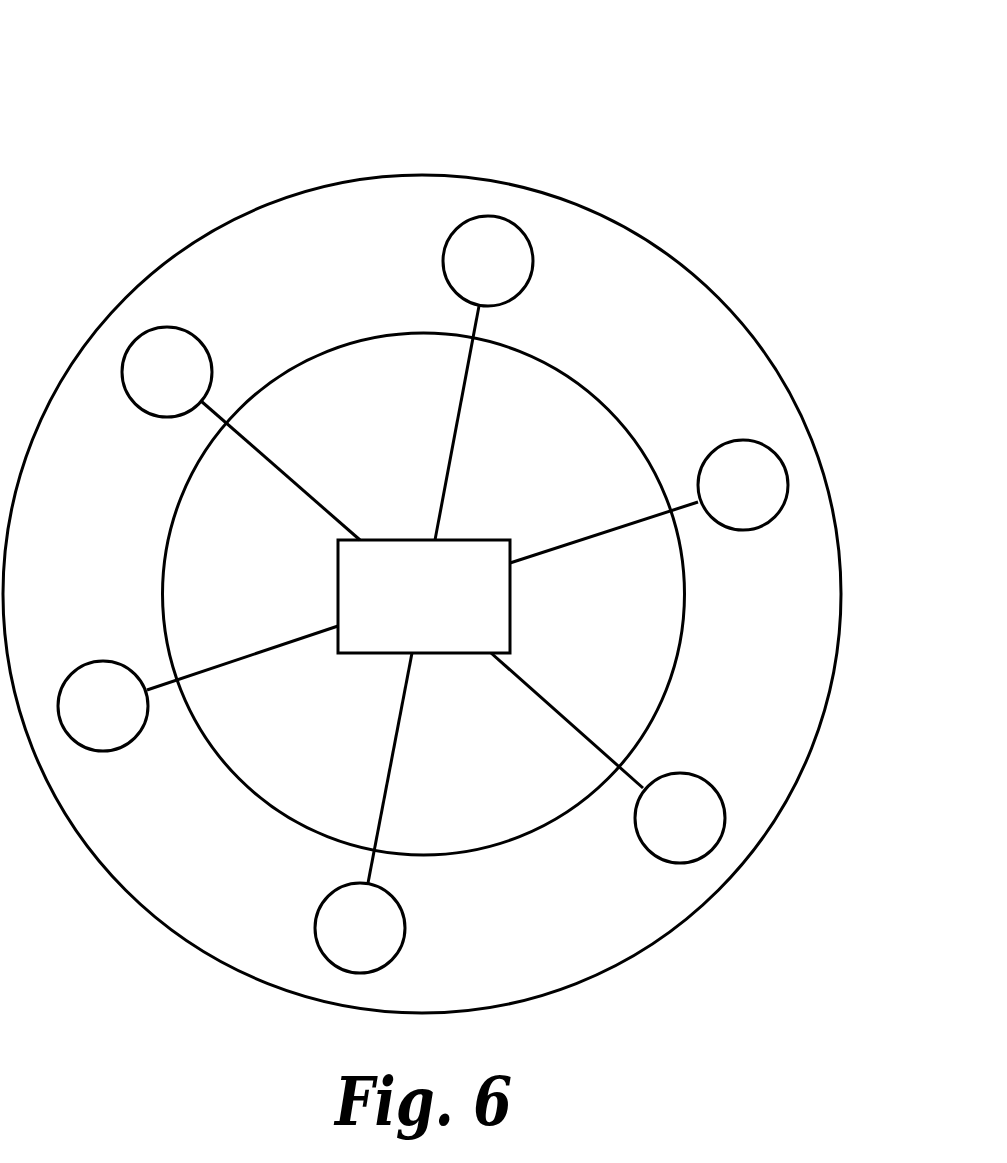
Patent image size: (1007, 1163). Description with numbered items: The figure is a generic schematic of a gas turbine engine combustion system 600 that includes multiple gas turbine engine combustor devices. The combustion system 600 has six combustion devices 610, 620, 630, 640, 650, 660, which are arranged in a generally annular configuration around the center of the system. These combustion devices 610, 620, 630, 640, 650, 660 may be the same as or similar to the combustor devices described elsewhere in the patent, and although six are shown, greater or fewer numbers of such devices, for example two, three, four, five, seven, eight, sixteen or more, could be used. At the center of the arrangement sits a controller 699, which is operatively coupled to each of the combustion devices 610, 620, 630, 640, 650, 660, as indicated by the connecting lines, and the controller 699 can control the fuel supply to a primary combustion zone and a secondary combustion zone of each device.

The gas turbine engine combustion system 600 is at (740, 153).
The controller 699 is at (448, 612).
The combustion device 610 is at (478, 258).
The combustion device 620 is at (740, 477).
The combustion device 630 is at (680, 808).
The combustion device 640 is at (368, 937).
The combustion device 650 is at (100, 693).
The combustion device 660 is at (182, 362).